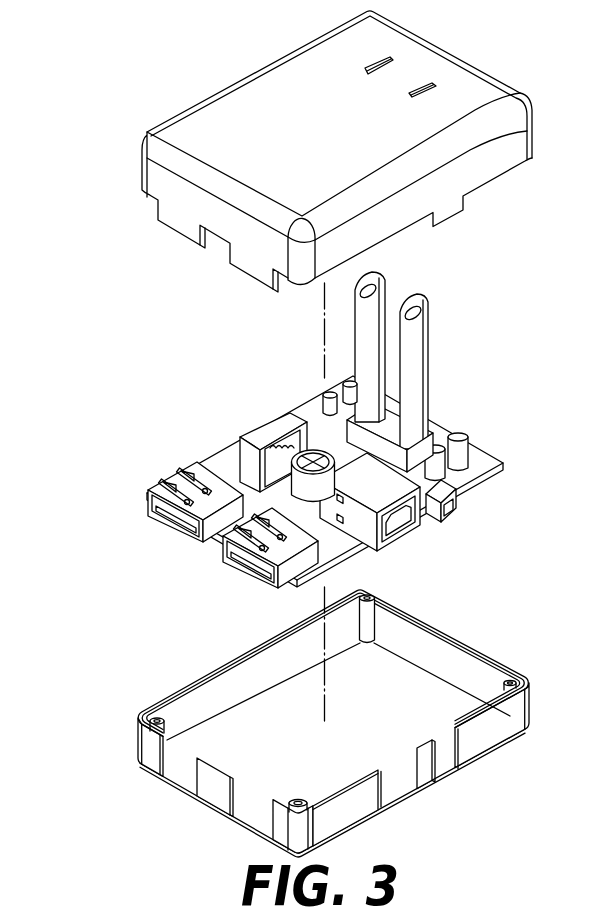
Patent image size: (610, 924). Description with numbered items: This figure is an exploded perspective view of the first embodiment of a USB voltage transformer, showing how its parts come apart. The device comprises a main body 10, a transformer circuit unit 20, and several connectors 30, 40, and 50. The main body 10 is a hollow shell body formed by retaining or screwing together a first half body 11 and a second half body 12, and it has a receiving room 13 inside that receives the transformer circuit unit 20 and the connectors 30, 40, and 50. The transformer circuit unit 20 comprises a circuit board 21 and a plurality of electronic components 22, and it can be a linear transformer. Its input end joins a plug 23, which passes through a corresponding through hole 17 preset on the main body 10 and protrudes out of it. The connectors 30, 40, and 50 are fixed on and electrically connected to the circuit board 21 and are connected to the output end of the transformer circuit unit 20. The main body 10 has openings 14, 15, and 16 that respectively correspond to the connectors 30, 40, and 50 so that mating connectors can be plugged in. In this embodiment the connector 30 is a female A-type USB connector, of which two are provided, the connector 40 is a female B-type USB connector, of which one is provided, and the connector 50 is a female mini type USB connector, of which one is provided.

The main body 10 is at (146, 104).
The first half body 11 is at (326, 723).
The second half body 12 is at (142, 176).
The receiving room 13 is at (427, 677).
The opening 14 is at (161, 774).
The opening 15 is at (411, 791).
The opening 16 is at (455, 770).
The through hole 17 is at (437, 84).
The transformer circuit unit 20 is at (480, 431).
The circuit board 21 is at (506, 471).
The electronic components 22 is at (330, 450).
The plug 23 is at (417, 367).
The connector 30 is at (147, 497).
The connector 40 is at (404, 534).
The connector 50 is at (456, 508).